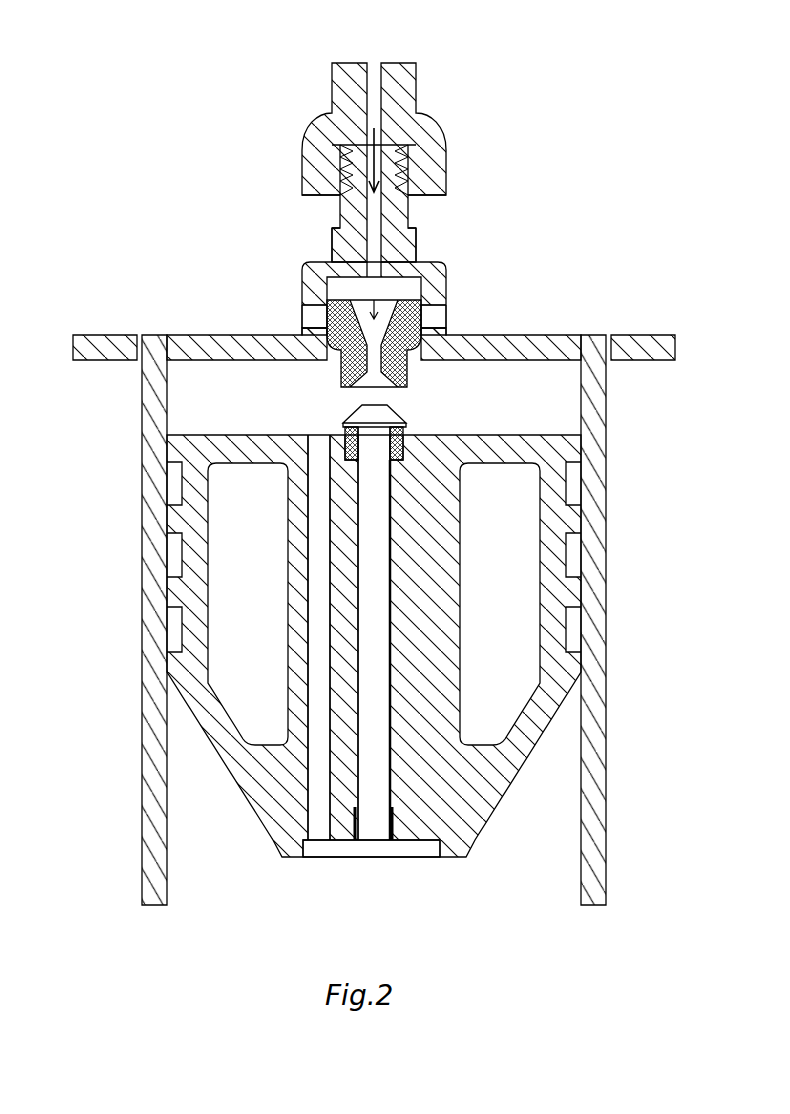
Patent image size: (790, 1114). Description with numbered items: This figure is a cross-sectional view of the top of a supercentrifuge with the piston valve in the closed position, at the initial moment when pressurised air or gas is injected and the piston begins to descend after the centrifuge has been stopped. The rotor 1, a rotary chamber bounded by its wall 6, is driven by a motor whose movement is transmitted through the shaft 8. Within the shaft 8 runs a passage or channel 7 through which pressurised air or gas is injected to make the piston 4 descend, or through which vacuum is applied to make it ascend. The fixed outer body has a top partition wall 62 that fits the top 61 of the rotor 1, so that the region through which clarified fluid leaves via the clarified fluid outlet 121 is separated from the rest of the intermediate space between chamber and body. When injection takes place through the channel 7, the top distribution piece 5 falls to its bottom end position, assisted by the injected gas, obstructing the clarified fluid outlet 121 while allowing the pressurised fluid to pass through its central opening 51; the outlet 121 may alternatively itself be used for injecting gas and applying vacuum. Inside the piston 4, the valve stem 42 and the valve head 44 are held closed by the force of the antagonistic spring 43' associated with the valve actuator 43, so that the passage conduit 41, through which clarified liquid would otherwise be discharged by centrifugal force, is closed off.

The rotor 1 is at (426, 665).
The piston 4 is at (560, 593).
The top distribution piece 5 is at (342, 303).
The wall 6 is at (142, 577).
The passage or channel 7 is at (378, 66).
The shaft 8 is at (447, 172).
The passage conduit 41 is at (317, 820).
The valve stem 42 is at (362, 822).
The valve actuator 43 is at (395, 400).
The antagonistic spring 43' is at (342, 426).
The valve head 44 is at (410, 848).
The central opening 51 is at (312, 262).
The top of rotary chamber 61 is at (525, 335).
The top partition wall 62 is at (655, 335).
The clarified fluid outlet 121 is at (304, 316).